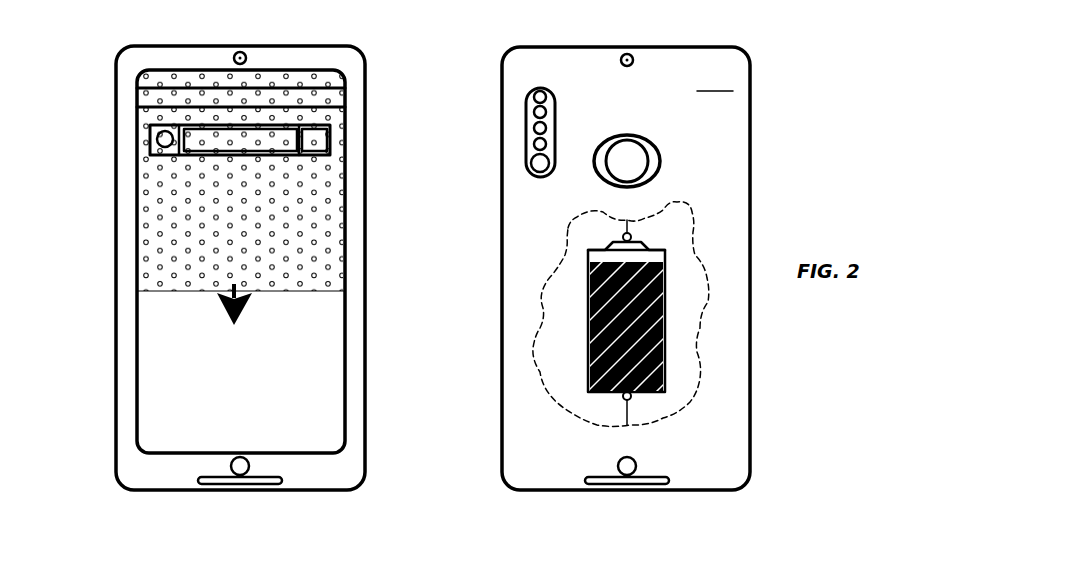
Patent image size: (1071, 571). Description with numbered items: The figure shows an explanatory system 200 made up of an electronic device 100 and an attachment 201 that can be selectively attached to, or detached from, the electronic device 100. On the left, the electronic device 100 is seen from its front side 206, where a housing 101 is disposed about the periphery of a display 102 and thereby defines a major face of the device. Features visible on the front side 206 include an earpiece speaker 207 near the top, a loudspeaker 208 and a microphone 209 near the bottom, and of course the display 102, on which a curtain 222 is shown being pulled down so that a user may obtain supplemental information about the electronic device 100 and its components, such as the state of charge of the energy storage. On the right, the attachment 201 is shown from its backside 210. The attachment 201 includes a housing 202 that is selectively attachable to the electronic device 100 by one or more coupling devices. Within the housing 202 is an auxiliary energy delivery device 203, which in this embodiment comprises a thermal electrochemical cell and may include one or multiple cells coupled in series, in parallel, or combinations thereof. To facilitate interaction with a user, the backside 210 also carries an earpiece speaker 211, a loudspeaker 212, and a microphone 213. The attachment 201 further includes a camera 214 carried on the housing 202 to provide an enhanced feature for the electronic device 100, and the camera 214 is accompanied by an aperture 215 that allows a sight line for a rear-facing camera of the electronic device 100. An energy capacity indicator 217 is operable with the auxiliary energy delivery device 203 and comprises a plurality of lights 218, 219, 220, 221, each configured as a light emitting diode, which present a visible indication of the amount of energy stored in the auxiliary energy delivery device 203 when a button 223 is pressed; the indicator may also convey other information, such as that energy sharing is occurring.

The electronic device 100 is at (84, 143).
The housing 101 is at (355, 440).
The display 102 is at (318, 357).
The front side 206 is at (140, 472).
The earpiece speaker 207 is at (243, 52).
The loudspeaker 208 is at (257, 487).
The microphone 209 is at (240, 478).
The curtain 222 is at (158, 220).
The system 200 is at (806, 148).
The attachment 201 is at (755, 414).
The housing 202 is at (730, 440).
The auxiliary energy delivery device 203 is at (664, 368).
The backside 210 is at (717, 79).
The earpiece speaker 211 is at (628, 52).
The loudspeaker 212 is at (650, 488).
The microphone 213 is at (620, 466).
The camera 214 is at (628, 160).
The aperture 215 is at (648, 142).
The energy capacity indicator 217 is at (556, 125).
The light 218 is at (538, 96).
The light 219 is at (538, 112).
The light 220 is at (538, 128).
The light 221 is at (538, 144).
The button 223 is at (540, 170).